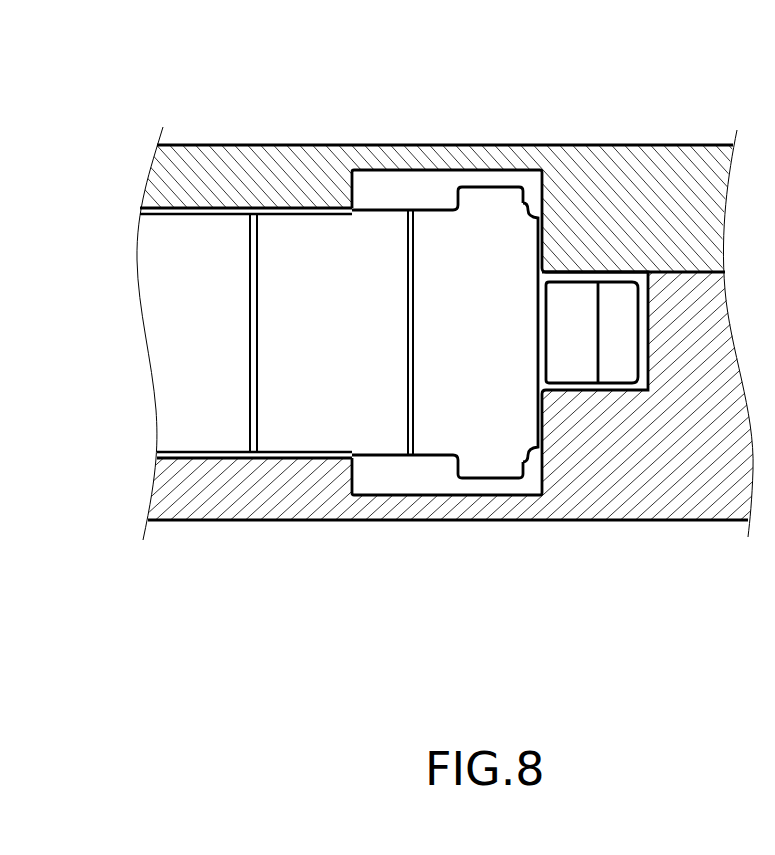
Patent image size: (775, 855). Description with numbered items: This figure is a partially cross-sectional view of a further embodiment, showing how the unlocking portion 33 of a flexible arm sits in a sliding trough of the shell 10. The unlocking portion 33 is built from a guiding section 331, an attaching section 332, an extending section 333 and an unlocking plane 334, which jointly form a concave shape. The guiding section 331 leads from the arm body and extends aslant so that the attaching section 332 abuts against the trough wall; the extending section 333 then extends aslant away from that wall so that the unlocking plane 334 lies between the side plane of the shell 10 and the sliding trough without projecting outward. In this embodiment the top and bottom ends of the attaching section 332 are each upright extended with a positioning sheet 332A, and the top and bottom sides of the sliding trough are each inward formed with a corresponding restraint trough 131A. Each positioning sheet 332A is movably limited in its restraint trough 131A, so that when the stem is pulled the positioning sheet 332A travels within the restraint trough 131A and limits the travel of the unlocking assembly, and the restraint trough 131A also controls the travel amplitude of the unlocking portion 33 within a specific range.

The shell 10 is at (655, 137).
The restraint trough 131A is at (385, 487).
The unlocking portion 33 is at (403, 381).
The guiding section 331 is at (300, 430).
The attaching section 332 is at (440, 412).
The positioning sheet 332A is at (494, 193).
The extending section 333 is at (570, 367).
The unlocking plane 334 is at (632, 450).